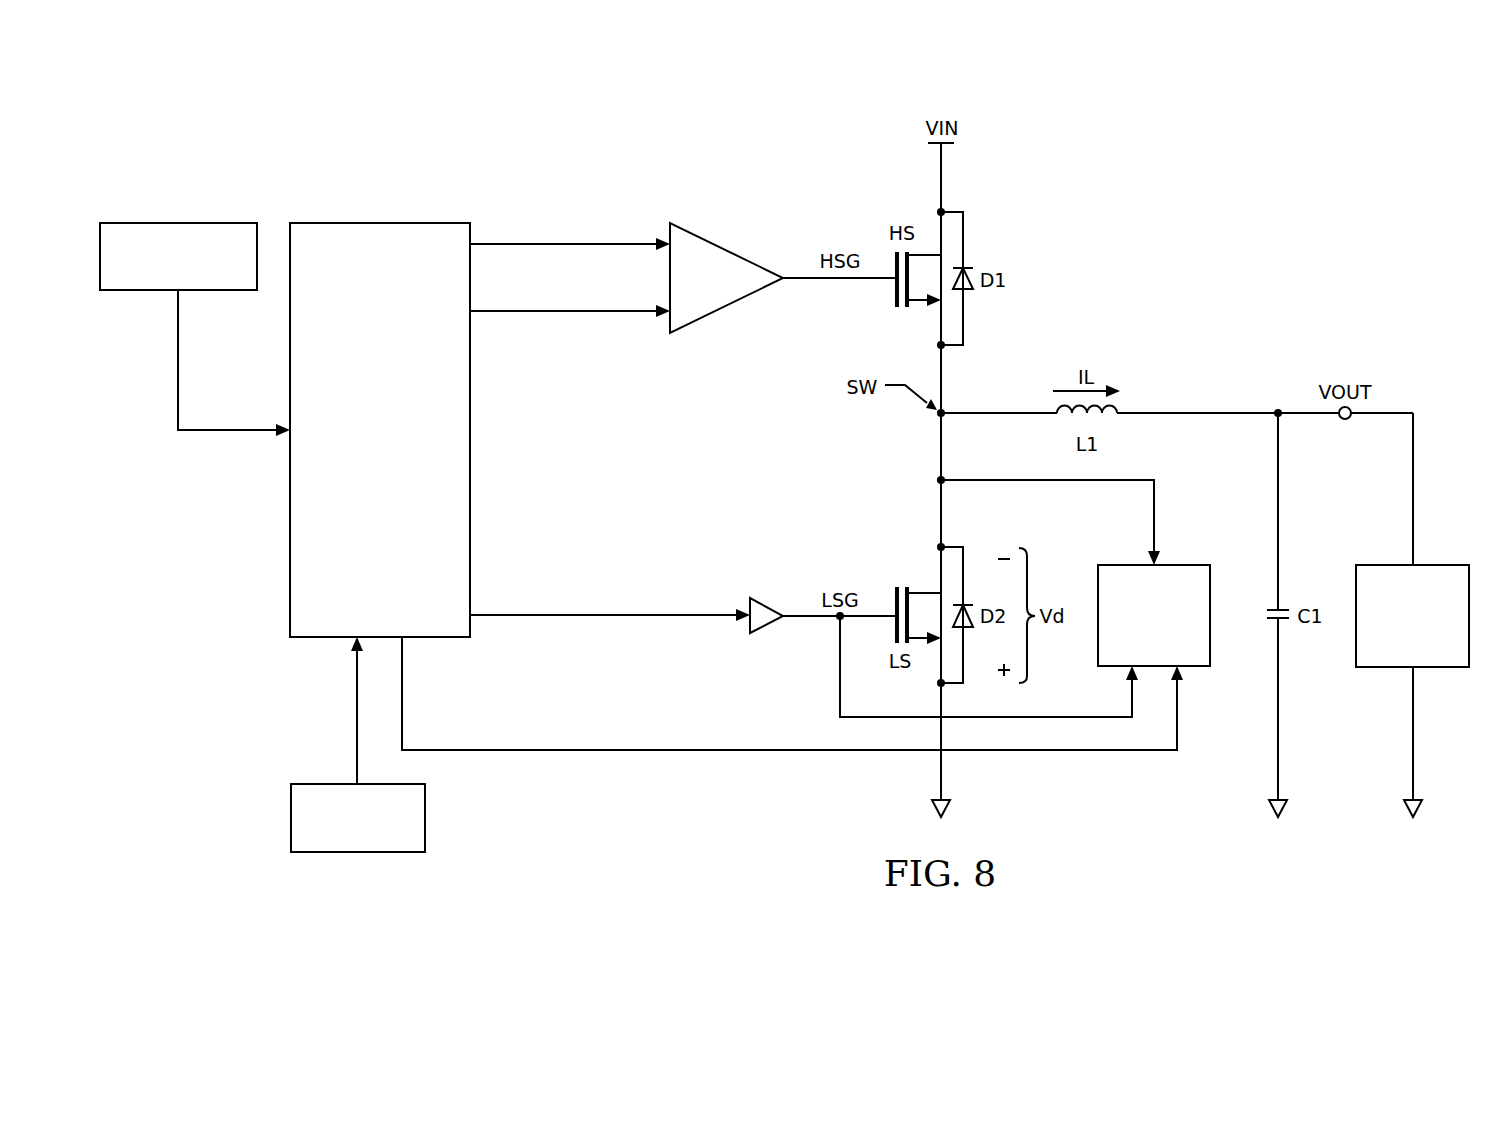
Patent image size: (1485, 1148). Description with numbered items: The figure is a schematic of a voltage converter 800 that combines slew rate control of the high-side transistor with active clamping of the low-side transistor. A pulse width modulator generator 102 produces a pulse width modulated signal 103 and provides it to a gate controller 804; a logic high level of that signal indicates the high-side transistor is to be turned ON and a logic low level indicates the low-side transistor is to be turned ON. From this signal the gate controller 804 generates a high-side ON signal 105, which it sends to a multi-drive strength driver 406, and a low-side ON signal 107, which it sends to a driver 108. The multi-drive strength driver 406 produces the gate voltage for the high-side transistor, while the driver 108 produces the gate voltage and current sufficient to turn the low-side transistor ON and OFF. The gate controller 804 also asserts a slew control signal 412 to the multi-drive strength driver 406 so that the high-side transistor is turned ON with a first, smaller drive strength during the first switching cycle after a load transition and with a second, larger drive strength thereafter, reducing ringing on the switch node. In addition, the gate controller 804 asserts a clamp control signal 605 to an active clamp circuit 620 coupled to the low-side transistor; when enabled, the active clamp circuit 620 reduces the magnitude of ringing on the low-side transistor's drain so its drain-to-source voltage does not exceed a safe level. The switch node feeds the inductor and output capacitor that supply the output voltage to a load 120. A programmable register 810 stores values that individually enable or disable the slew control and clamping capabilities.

The voltage converter 800 is at (1306, 172).
The PWM generator 102 is at (168, 222).
The PWM signal 103 is at (237, 432).
The gate controller 804 is at (358, 477).
The slew control signal 412 is at (510, 243).
The HSON signal 105 is at (570, 313).
The multi-drive strength driver 406 is at (728, 250).
The LSON signal 107 is at (612, 618).
The driver 108 is at (771, 628).
The active clamp circuit 620 is at (1188, 563).
The clamp control signal 605 is at (627, 752).
The register 810 is at (291, 817).
The load 120 is at (1436, 668).